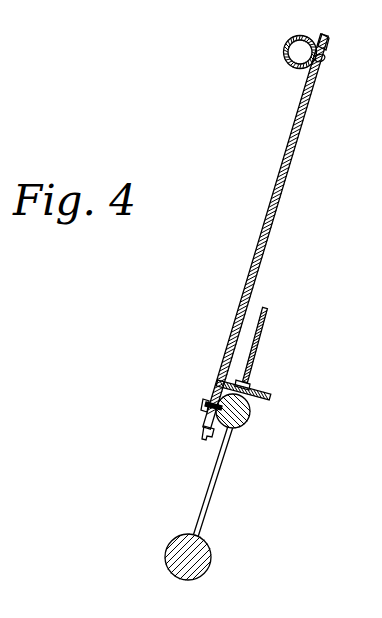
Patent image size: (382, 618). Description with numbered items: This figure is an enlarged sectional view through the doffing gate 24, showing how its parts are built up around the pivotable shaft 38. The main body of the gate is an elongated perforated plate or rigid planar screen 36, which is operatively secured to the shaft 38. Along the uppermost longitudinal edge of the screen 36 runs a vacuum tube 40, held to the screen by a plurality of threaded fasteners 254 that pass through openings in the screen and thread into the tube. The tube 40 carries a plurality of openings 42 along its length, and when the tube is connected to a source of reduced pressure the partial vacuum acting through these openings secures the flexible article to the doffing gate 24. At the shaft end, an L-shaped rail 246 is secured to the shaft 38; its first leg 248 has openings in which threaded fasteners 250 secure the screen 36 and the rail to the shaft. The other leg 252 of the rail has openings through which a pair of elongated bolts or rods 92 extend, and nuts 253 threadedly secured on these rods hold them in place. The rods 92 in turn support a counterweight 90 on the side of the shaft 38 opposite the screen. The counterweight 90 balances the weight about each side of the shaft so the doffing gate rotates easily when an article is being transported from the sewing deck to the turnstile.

The doffing gate 24 is at (182, 348).
The screen 36 is at (244, 287).
The shaft 38 is at (254, 416).
The tube 40 is at (291, 64).
The openings 42 is at (287, 42).
The counterweight 90 is at (167, 559).
The bolts 92 is at (210, 485).
The L-shaped rail 246 is at (272, 395).
The first leg 248 is at (213, 431).
The threaded fasteners 250 is at (203, 404).
The leg 252 is at (262, 390).
The nuts 253 is at (237, 382).
The threaded fasteners 254 is at (326, 62).